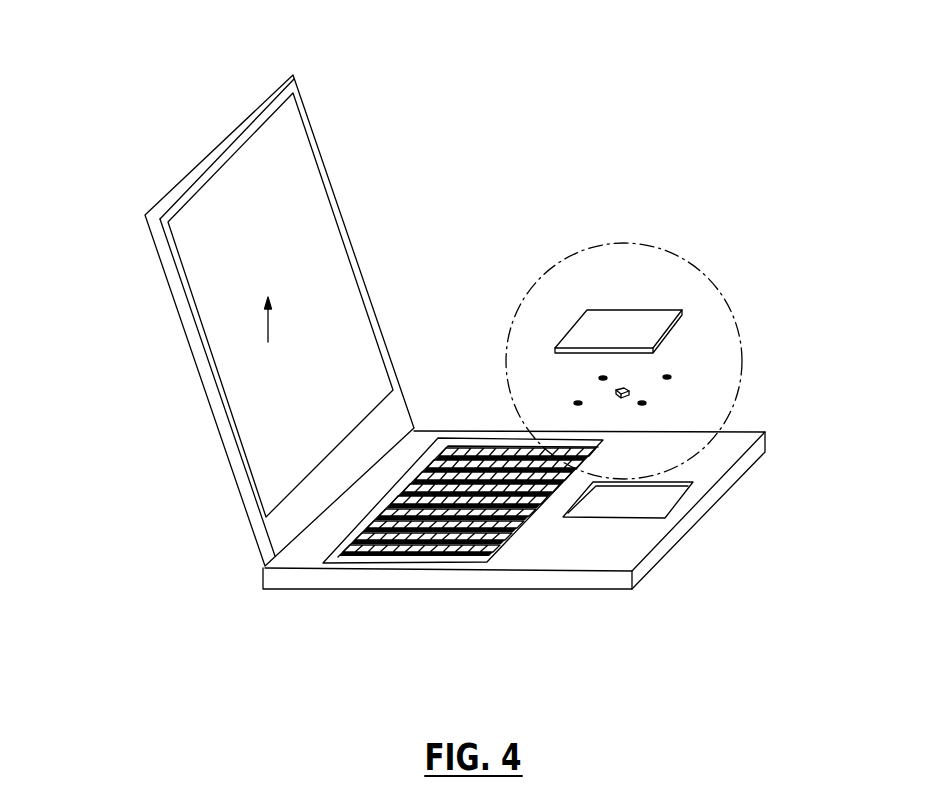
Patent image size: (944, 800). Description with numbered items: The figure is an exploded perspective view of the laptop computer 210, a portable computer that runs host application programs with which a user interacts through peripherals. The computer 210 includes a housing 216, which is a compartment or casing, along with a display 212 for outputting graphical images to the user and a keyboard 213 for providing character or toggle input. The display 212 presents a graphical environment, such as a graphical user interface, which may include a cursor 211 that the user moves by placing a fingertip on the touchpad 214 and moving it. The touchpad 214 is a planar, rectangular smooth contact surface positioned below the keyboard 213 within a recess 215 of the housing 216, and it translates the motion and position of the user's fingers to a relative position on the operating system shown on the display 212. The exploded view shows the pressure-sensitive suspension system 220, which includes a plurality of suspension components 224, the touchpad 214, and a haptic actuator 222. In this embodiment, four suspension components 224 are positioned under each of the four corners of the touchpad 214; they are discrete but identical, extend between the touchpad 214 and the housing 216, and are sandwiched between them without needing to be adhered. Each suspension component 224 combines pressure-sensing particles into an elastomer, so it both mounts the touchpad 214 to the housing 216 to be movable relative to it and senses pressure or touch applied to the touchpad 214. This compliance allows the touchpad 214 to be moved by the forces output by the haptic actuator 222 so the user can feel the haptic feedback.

The computer 210 is at (136, 174).
The cursor 211 is at (268, 330).
The display 212 is at (322, 248).
The keyboard 213 is at (383, 552).
The touchpad 214 is at (653, 320).
The recess 215 is at (647, 502).
The housing 216 is at (578, 552).
The pressure-sensitive suspension system 220 is at (591, 238).
The haptic actuator 222 is at (632, 390).
The suspension component 224 is at (667, 377).